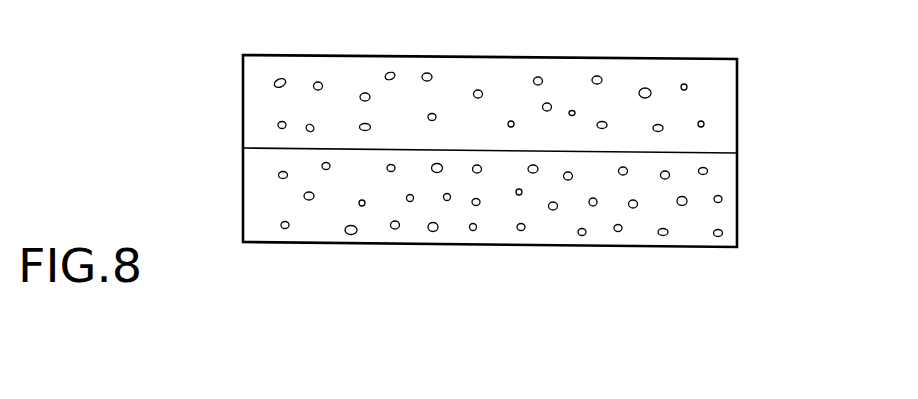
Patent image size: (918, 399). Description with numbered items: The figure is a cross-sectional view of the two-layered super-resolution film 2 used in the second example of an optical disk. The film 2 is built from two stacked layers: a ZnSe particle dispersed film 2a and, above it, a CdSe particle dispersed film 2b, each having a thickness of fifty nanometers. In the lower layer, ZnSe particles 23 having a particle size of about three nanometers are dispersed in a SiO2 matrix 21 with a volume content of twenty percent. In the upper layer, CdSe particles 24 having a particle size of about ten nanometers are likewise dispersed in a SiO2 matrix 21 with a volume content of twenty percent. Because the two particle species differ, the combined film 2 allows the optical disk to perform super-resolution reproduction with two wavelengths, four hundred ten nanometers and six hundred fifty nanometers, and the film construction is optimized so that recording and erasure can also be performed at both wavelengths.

The two-layered super-resolution film 2 is at (235, 53).
The ZnSe particle dispersed film 2a is at (746, 202).
The CdSe particle dispersed film 2b is at (746, 109).
The SiO2 matrix 21 is at (355, 72).
The ZnSe particles 23 is at (583, 237).
The CdSe particles 24 is at (539, 76).